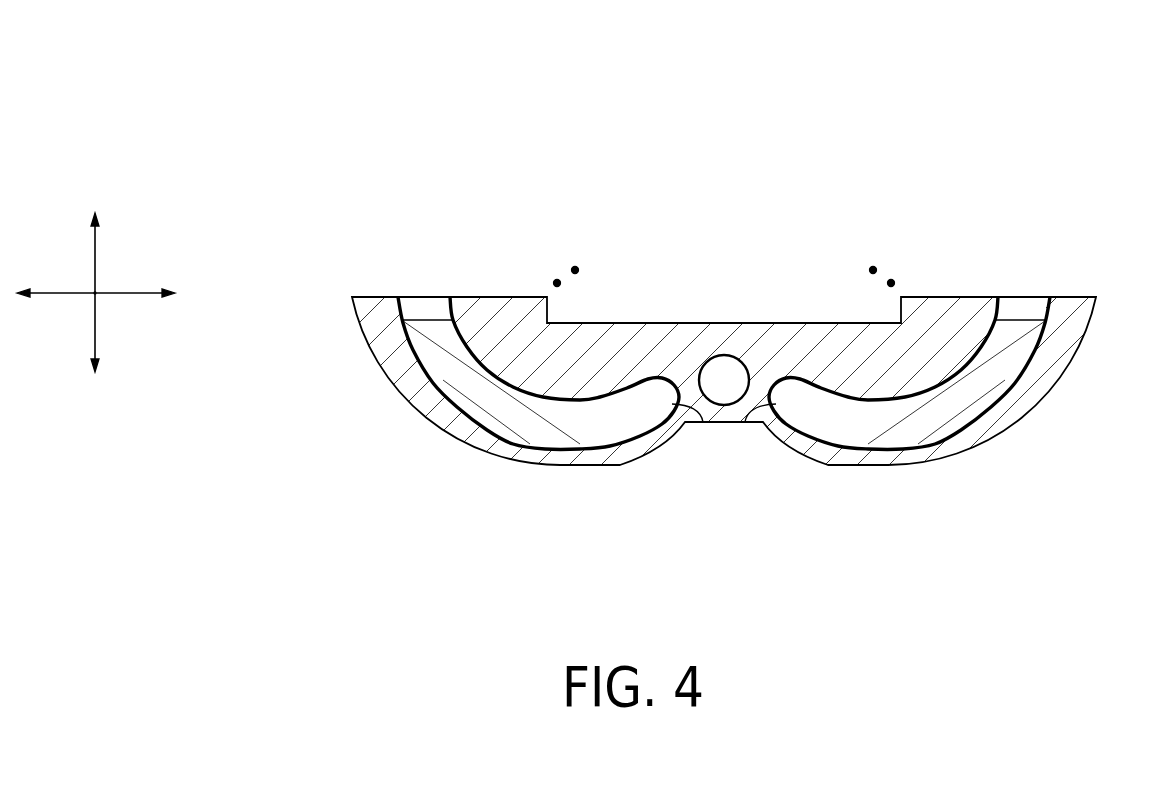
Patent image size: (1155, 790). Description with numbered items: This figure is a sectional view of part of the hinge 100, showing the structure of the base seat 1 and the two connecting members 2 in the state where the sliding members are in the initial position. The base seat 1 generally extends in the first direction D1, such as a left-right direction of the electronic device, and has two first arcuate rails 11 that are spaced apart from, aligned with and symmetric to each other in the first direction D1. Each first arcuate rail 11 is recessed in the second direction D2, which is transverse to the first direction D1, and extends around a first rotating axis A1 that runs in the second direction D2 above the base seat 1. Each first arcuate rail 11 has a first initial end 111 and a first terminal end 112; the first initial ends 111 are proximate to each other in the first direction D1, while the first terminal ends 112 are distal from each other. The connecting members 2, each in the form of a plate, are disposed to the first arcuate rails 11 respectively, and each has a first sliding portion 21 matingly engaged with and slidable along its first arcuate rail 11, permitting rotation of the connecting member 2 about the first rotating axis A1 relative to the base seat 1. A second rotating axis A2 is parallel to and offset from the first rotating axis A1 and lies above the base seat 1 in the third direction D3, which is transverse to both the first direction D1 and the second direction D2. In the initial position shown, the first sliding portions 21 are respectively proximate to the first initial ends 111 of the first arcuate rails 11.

The hinge 100 is at (273, 61).
The base seat 1 is at (662, 374).
The first arcuate rail 11 is at (533, 446).
The first initial end 111 is at (702, 424).
The first terminal end 112 is at (400, 303).
The connecting member 2 is at (719, 421).
The first sliding portion 21 is at (477, 393).
The first rotating axis A1 is at (576, 267).
The second rotating axis A2 is at (555, 281).
The first direction D1 is at (116, 294).
The second direction D2 is at (116, 278).
The third direction D3 is at (94, 277).